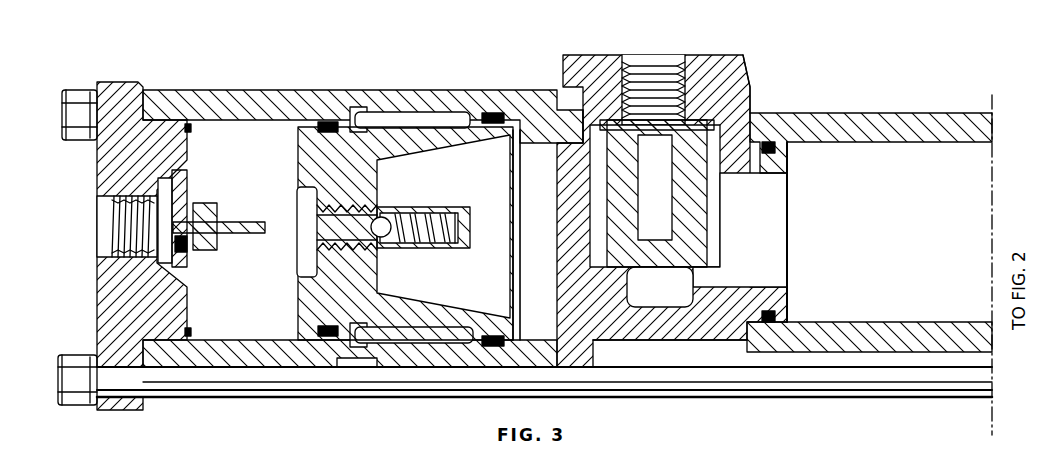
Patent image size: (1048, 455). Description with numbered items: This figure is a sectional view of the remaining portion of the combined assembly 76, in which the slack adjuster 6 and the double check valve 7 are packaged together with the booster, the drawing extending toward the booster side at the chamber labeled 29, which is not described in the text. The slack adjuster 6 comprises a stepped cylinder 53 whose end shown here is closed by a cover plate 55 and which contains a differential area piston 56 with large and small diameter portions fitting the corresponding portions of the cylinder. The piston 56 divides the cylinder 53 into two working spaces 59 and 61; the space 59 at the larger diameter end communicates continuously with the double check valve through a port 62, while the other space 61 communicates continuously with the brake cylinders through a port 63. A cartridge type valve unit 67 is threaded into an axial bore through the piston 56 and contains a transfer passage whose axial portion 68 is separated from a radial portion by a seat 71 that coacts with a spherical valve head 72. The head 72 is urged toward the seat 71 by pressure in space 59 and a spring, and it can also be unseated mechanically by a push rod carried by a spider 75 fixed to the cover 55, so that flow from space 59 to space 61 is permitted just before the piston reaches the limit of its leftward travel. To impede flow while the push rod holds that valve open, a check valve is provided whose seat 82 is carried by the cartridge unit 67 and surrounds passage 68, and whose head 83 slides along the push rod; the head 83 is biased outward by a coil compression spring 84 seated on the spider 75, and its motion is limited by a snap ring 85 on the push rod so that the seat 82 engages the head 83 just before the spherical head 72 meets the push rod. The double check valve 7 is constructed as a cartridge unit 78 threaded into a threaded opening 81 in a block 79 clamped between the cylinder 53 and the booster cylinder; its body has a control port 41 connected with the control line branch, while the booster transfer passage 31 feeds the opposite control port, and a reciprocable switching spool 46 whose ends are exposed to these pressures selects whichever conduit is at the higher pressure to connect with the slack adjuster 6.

The slack adjuster unit 6 is at (319, 227).
The double check valve unit 7 is at (677, 197).
The cylinder chamber 29 is at (915, 236).
The booster transfer passage 31 is at (673, 295).
The control port 41 is at (684, 55).
The switching spool 46 is at (607, 183).
The stepped cylinder 53 is at (363, 211).
The cover plate 55 is at (97, 312).
The differential area piston 56 is at (415, 107).
The working space 59 is at (412, 233).
The working space 61 is at (276, 146).
The port 62 is at (557, 210).
The port 63 is at (97, 212).
The cartridge type valve unit 67 is at (410, 251).
The axial portion of transfer passage 68 is at (323, 217).
The seat 71 is at (388, 221).
The spherical valve head 72 is at (265, 230).
The spider 75 is at (178, 231).
The assembly 76 is at (869, 203).
The cartridge unit 78 is at (750, 75).
The block 79 is at (665, 338).
The threaded opening 81 is at (583, 100).
The check valve seat 82 is at (300, 262).
The check valve head 83 is at (200, 243).
The coil compression spring 84 is at (190, 267).
The snap ring 85 is at (217, 233).